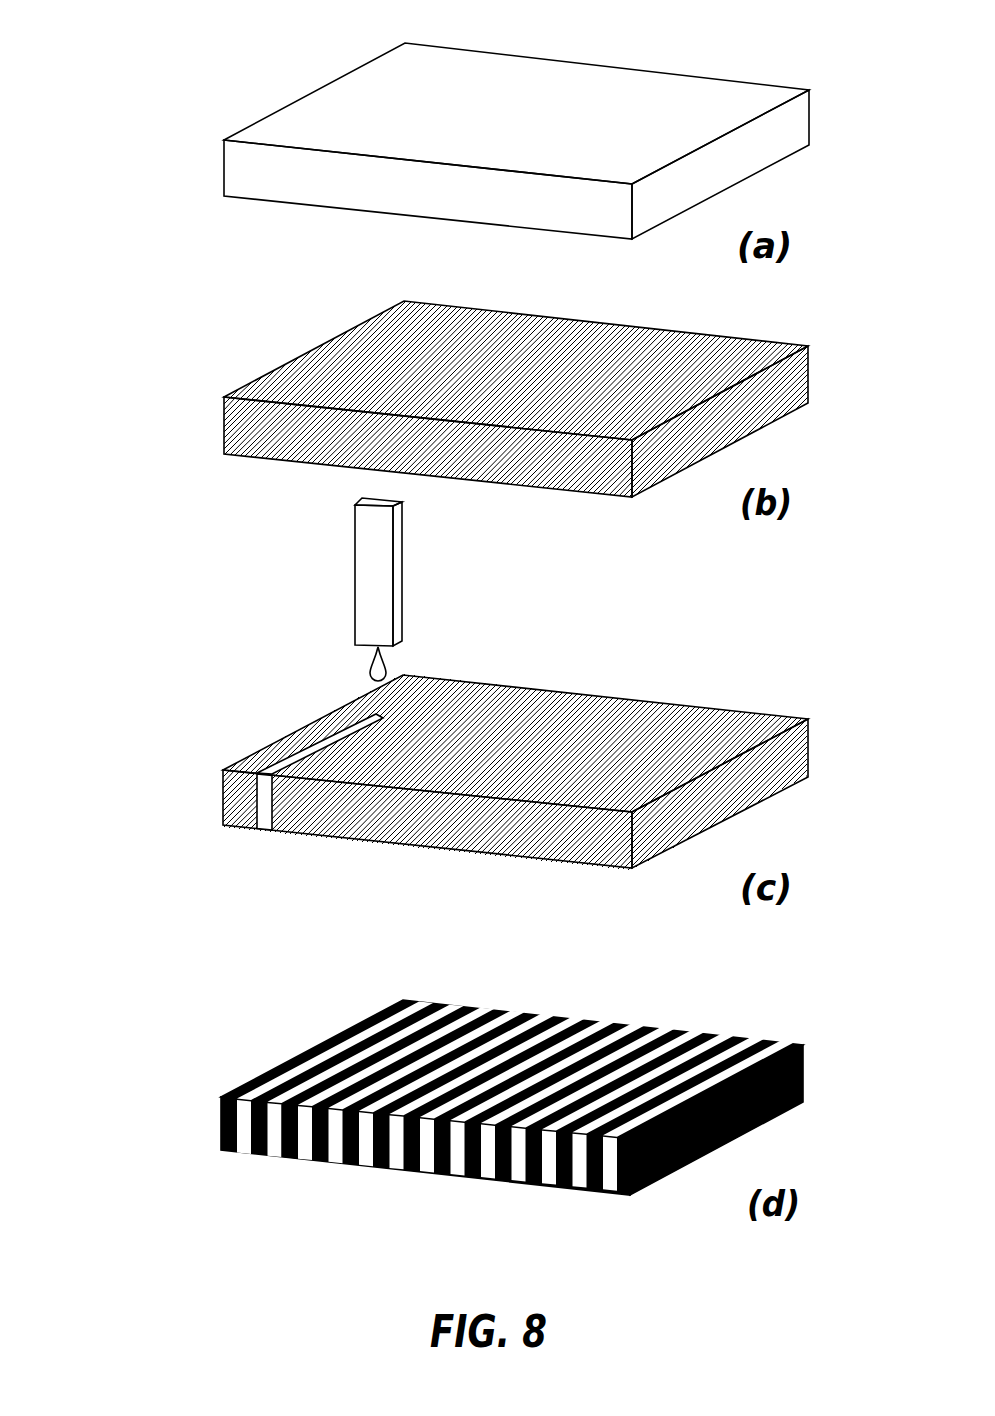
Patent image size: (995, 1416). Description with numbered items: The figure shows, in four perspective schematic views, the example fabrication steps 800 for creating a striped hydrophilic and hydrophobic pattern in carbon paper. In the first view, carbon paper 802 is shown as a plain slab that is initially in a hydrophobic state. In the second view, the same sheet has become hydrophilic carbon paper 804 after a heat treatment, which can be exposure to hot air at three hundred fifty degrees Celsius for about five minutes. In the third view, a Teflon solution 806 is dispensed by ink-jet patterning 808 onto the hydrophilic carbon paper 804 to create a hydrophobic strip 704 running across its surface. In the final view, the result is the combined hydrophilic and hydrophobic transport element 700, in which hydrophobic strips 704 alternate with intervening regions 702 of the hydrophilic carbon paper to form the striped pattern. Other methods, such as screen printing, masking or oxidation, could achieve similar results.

The fabrication steps 800 is at (178, 67).
The carbon paper 802 is at (224, 170).
The hydrophilic carbon paper 804 is at (224, 418).
The Teflon solution 806 is at (370, 670).
The ink-jet patterning 808 is at (355, 568).
The hydrophobic strip 704 is at (312, 738).
The transport element 700 is at (221, 1106).
The wall 702 is at (287, 1158).